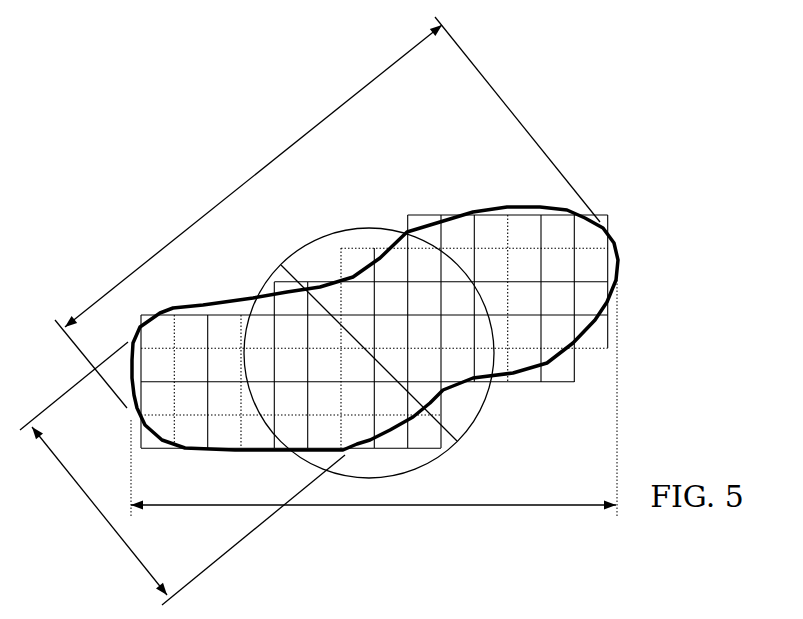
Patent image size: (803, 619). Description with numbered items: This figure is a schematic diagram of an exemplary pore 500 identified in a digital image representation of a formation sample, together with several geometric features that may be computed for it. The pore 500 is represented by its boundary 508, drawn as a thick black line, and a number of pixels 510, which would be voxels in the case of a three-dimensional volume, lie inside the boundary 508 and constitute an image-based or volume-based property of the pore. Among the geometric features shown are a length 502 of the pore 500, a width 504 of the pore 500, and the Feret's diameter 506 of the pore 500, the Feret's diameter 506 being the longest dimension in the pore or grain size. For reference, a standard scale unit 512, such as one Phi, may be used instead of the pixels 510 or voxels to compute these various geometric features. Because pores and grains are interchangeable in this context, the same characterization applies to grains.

The pore 500 is at (572, 84).
The length 502 is at (252, 177).
The width 504 is at (97, 510).
The Feret's diameter 506 is at (372, 508).
The boundary 508 is at (238, 296).
The pixels 510 is at (458, 227).
The standard scale unit 512 is at (313, 246).